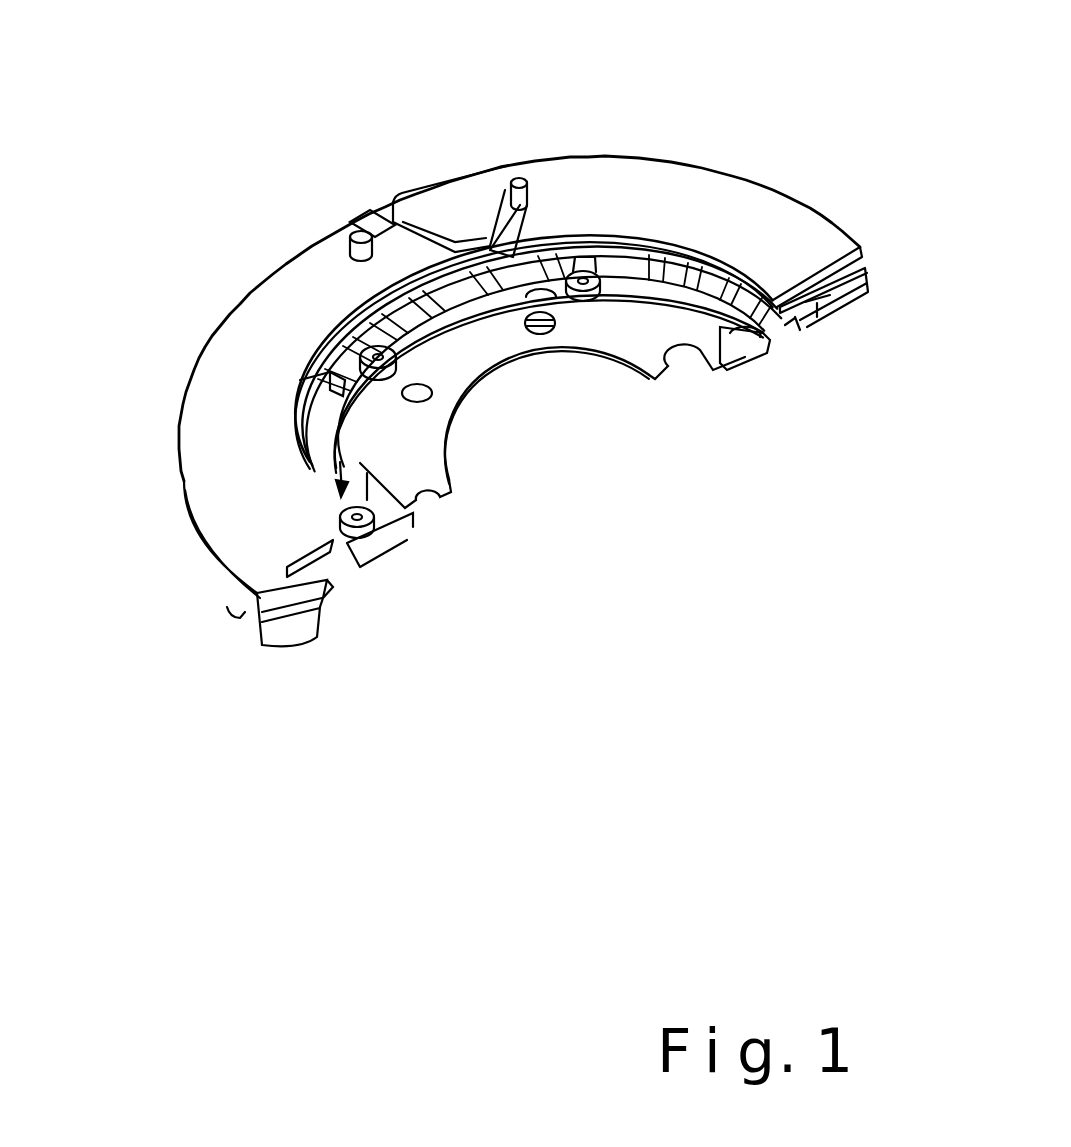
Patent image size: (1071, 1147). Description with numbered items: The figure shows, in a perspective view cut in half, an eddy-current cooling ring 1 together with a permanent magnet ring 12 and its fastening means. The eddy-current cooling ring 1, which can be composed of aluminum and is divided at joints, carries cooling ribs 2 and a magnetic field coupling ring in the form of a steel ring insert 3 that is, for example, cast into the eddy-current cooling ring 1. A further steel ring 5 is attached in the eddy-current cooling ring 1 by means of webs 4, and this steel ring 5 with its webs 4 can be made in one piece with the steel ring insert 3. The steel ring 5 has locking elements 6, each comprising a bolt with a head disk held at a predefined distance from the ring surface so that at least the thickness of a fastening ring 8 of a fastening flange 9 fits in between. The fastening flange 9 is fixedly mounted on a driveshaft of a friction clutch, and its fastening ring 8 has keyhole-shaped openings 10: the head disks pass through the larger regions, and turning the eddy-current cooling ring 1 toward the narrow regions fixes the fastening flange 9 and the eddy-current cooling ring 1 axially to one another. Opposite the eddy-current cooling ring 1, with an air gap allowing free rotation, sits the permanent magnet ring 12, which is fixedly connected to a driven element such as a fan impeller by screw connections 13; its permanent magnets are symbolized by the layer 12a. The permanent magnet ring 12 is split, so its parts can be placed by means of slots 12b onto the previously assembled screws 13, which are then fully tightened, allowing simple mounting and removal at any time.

The eddy-current cooling ring 1 is at (721, 126).
The cooling ribs 2 is at (232, 612).
The steel ring insert 3 is at (297, 613).
The webs 4 is at (343, 352).
The steel ring 5 is at (745, 353).
The locking elements 6 is at (423, 500).
The fastening ring 8 is at (427, 330).
The fastening flange 9 is at (620, 382).
The keyhole-shaped openings 10 is at (357, 395).
The permanent magnet ring 12 is at (773, 223).
The layer 12a is at (333, 610).
The slots 12b is at (377, 215).
The screw connections 13 is at (353, 237).